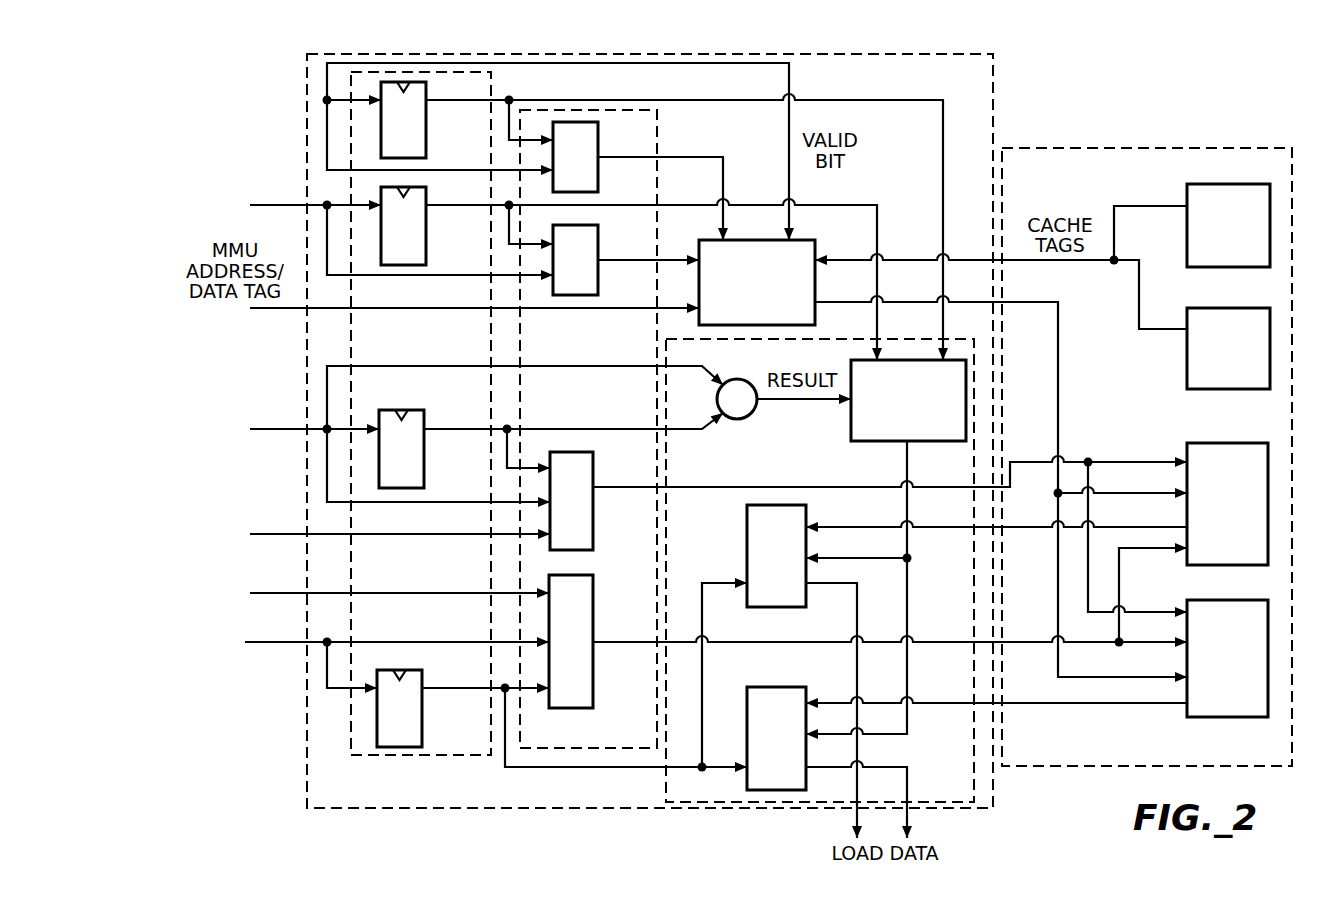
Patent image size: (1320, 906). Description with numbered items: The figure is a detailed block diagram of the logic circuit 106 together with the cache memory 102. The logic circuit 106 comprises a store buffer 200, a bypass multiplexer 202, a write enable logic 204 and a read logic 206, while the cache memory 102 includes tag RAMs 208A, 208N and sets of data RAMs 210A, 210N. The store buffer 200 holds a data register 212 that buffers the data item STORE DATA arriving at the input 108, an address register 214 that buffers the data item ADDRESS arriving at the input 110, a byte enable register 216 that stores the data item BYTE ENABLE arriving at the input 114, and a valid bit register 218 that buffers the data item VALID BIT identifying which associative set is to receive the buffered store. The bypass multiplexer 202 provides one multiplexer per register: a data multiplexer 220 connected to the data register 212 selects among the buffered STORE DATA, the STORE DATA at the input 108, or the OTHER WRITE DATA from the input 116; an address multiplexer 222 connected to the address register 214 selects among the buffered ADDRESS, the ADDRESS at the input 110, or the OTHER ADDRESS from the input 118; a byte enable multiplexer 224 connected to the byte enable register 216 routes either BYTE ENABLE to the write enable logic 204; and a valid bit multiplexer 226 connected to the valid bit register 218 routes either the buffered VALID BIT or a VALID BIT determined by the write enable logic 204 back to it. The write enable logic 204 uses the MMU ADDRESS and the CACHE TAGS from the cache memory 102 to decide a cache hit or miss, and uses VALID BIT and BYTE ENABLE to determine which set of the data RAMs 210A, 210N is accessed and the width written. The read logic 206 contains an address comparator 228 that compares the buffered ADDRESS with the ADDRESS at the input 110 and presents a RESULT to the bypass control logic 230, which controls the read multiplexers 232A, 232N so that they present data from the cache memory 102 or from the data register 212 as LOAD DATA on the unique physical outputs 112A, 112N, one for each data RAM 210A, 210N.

The cache memory 102 is at (1108, 770).
The logic circuit 106 is at (996, 95).
The input 108 is at (263, 643).
The input 110 is at (266, 431).
The physical output 112A is at (850, 817).
The physical output 112N is at (914, 817).
The input 114 is at (268, 207).
The input 116 is at (261, 594).
The input 118 is at (264, 535).
The store buffer 200 is at (436, 760).
The bypass multiplexer 202 is at (551, 754).
The write enable logic 204 is at (812, 240).
The read logic 206 is at (720, 806).
The tag RAM 208A is at (1237, 267).
The tag RAM 208N is at (1237, 389).
The data RAM 210A is at (1237, 565).
The data RAM 210N is at (1237, 717).
The data register 212 is at (422, 717).
The address register 214 is at (424, 462).
The byte enable register 216 is at (426, 247).
The valid bit register 218 is at (426, 140).
The data multiplexer 220 is at (570, 708).
The address multiplexer 222 is at (570, 550).
The byte enable multiplexer 224 is at (598, 282).
The valid bit multiplexer 226 is at (598, 180).
The address comparator 228 is at (750, 415).
The bypass control logic 230 is at (890, 441).
The read multiplexer 232A is at (747, 530).
The read multiplexer 232N is at (788, 687).